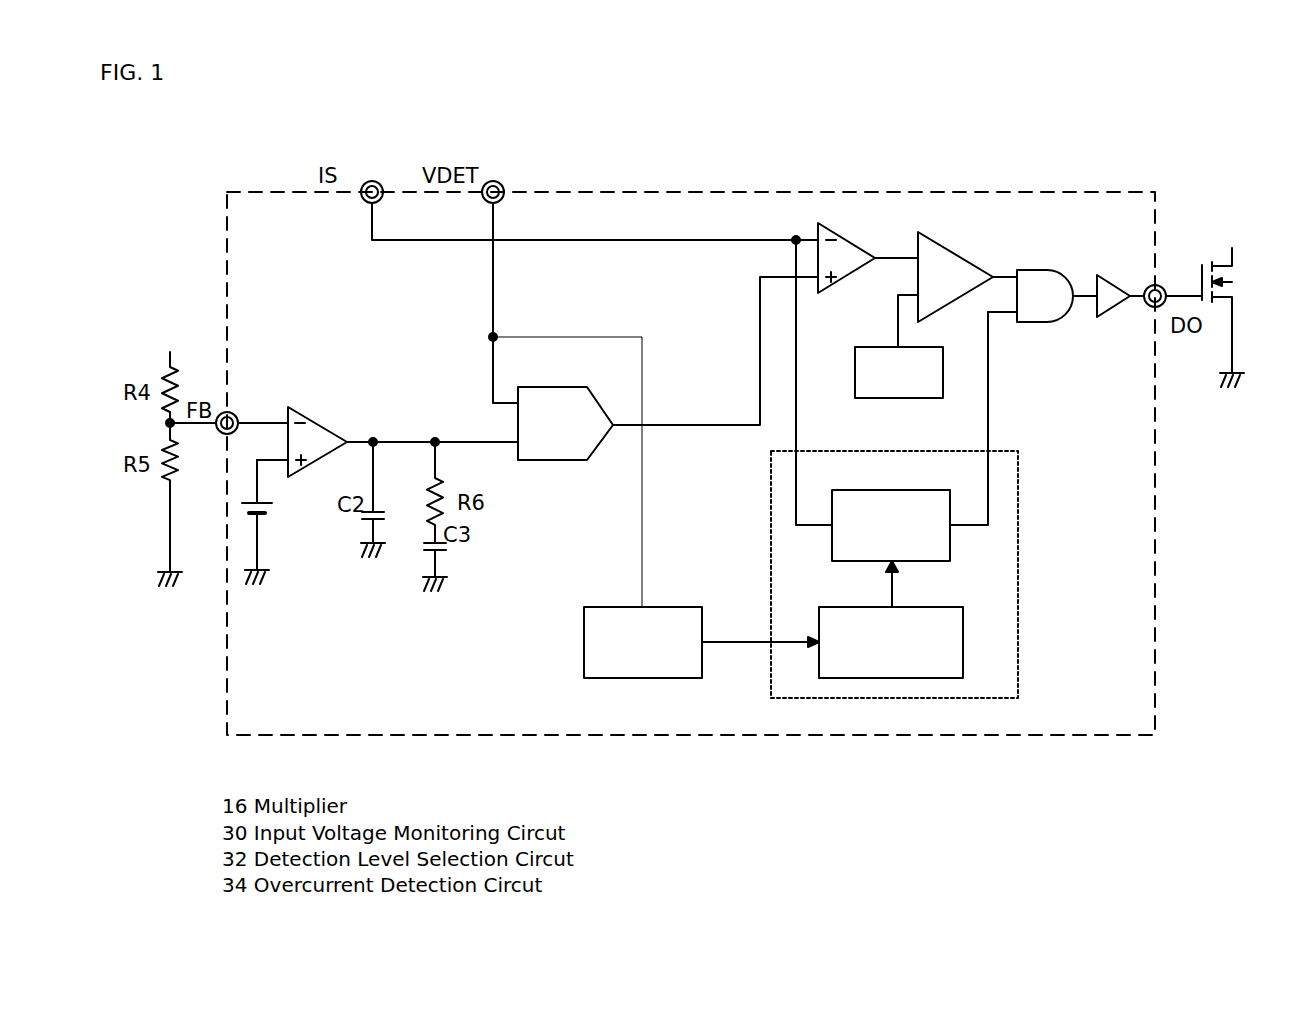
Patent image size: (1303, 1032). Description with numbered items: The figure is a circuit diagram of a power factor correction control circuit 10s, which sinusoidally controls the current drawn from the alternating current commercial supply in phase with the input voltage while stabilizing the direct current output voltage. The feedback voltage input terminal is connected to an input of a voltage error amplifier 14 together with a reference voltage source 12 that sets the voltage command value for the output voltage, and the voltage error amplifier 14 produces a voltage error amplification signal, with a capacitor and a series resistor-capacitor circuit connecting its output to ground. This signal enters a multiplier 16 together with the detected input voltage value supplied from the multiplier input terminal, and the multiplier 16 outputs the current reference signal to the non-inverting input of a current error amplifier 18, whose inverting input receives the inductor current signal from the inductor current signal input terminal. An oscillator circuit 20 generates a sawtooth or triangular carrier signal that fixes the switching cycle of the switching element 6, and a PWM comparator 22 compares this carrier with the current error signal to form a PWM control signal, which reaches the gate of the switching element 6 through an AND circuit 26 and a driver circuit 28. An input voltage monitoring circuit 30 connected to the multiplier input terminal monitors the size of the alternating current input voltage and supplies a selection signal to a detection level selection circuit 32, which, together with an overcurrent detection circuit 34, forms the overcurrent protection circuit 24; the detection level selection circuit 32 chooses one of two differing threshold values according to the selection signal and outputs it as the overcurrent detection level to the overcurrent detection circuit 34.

The switching element 6 is at (1238, 275).
The power factor correction control circuit 10s is at (990, 190).
The reference voltage source 12 is at (277, 508).
The voltage error amplifier 14 is at (316, 406).
The multiplier 16 is at (549, 386).
The current error amplifier 18 is at (848, 238).
The oscillator circuit 20 is at (893, 399).
The PWM comparator 22 is at (944, 240).
The overcurrent protection circuit 24 is at (1013, 432).
The AND circuit 26 is at (1040, 268).
The driver circuit 28 is at (1108, 272).
The input voltage monitoring circuit 30 is at (676, 606).
The detection level selection circuit 32 is at (956, 606).
The overcurrent detection circuit 34 is at (905, 489).